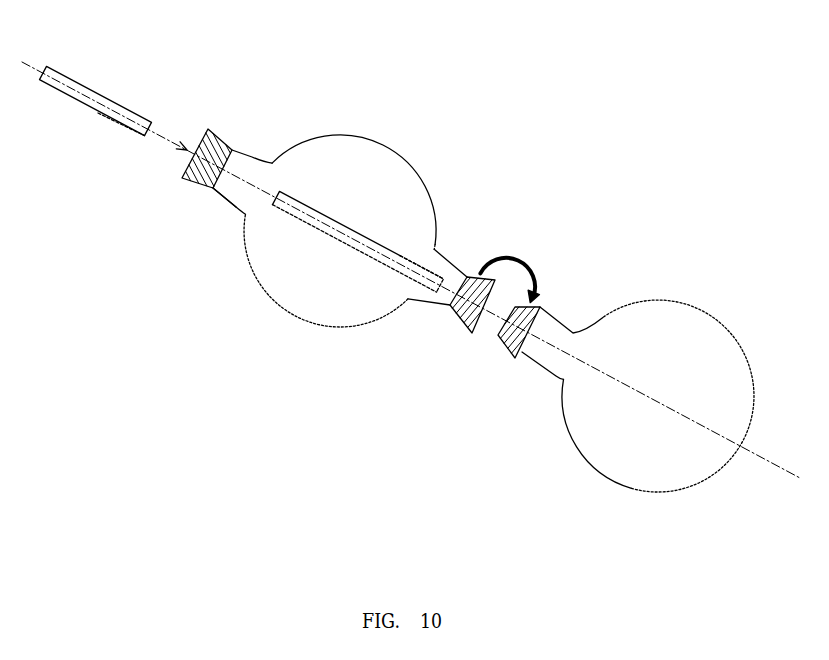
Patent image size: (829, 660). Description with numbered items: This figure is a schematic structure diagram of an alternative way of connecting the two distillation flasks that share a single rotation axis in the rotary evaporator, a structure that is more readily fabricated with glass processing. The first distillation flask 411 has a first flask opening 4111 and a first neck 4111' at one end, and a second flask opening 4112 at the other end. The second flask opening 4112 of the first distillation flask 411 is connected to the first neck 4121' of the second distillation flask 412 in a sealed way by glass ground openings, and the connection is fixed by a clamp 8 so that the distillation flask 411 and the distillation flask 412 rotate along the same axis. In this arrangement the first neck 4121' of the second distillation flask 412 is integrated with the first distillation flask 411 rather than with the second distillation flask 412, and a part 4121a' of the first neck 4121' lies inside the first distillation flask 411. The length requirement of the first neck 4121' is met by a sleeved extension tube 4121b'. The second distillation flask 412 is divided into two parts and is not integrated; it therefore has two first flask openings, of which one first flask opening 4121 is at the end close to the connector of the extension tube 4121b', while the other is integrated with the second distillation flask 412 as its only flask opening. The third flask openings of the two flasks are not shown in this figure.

The first flask opening of the second distillation flask 4121 is at (96, 85).
The extension tube 4121b' is at (85, 142).
The first flask opening of the first distillation flask 4111 is at (252, 135).
The first distillation flask 411 is at (378, 172).
The first neck of the first distillation flask 4111' is at (189, 226).
The first neck of the second distillation flask 4121' is at (309, 258).
The part of first neck of the second distillation flask 4121a' is at (320, 308).
The clamp 8 is at (515, 255).
The second flask opening of the first distillation flask 4112 is at (485, 310).
The second distillation flask 412 is at (672, 337).